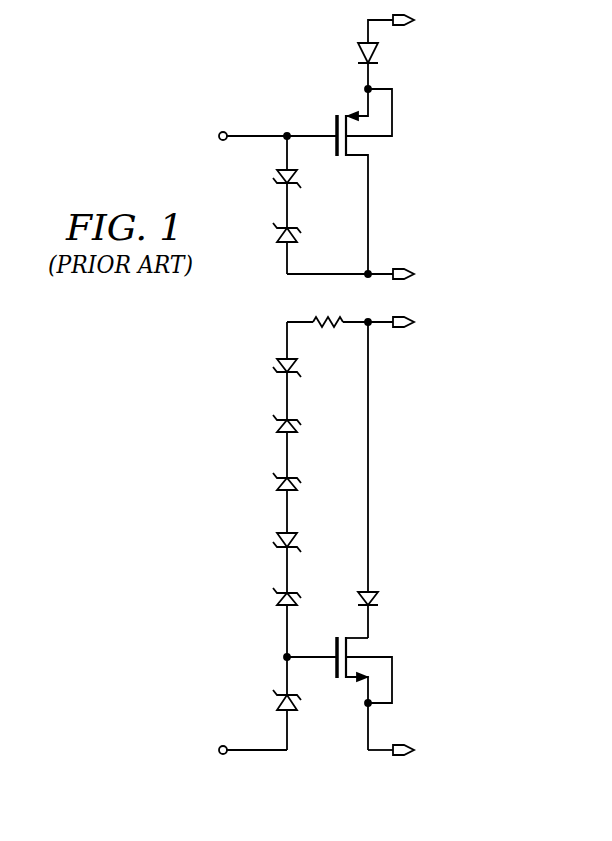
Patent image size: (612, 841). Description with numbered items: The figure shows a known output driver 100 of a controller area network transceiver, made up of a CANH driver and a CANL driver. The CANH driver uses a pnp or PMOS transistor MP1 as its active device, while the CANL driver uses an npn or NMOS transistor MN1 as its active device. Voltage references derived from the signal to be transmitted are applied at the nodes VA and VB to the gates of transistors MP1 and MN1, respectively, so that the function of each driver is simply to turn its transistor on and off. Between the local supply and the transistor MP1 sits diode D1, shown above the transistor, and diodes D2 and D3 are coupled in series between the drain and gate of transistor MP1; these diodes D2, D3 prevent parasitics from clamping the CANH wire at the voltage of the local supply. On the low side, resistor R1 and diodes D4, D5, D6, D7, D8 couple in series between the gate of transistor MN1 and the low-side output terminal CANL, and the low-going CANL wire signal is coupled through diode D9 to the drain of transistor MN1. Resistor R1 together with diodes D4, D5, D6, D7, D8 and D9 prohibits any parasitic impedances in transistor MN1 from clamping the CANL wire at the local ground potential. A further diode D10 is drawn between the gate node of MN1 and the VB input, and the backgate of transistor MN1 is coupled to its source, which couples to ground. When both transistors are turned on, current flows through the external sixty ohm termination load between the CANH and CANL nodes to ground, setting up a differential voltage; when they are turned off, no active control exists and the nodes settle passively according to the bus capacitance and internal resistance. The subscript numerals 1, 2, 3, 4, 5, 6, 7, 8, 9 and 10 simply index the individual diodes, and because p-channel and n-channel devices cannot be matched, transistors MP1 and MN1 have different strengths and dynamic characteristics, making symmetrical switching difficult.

The output driver 100 is at (256, 91).
The diode D1 1 is at (354, 54).
The zener diode D2 2 is at (272, 176).
The zener diode D3 3 is at (272, 232).
The zener diode D4 4 is at (273, 366).
The zener diode D5 5 is at (273, 422).
The zener diode D6 6 is at (273, 481).
The zener diode D7 7 is at (273, 542).
The zener diode D8 8 is at (273, 597).
The diode D9 9 is at (354, 597).
The zener diode D10 10 is at (265, 704).
The diode D1 is at (354, 54).
The diode D2 is at (272, 176).
The diode D3 is at (272, 232).
The diode D4 is at (273, 366).
The diode D5 is at (273, 422).
The diode D6 is at (273, 481).
The diode D7 is at (273, 542).
The diode D8 is at (273, 597).
The diode D9 is at (354, 597).
The zener diode D10 is at (265, 704).
The resistor R1 is at (328, 303).
The PMOS transistor MP1 is at (378, 181).
The NMOS transistor MN1 is at (379, 689).